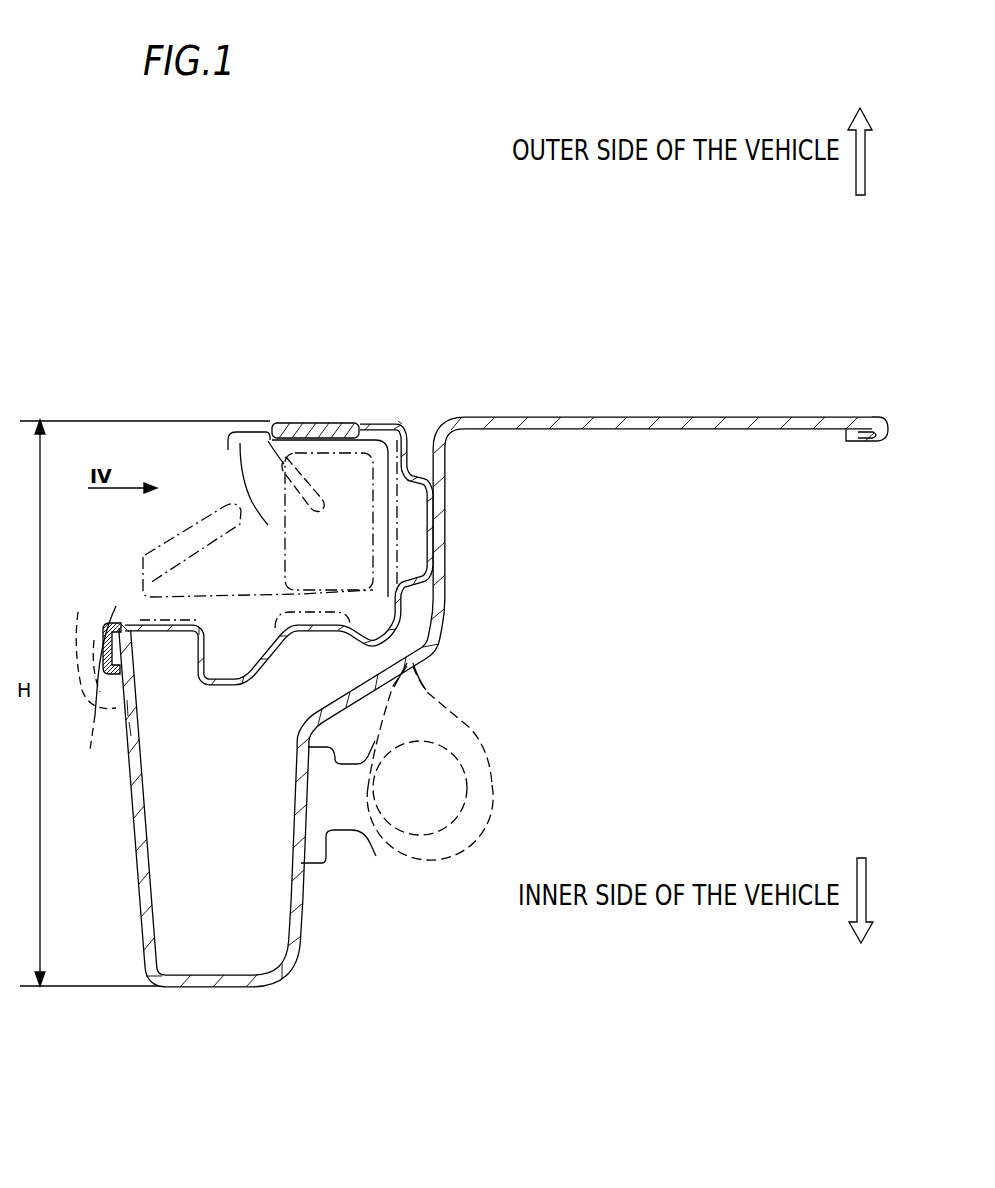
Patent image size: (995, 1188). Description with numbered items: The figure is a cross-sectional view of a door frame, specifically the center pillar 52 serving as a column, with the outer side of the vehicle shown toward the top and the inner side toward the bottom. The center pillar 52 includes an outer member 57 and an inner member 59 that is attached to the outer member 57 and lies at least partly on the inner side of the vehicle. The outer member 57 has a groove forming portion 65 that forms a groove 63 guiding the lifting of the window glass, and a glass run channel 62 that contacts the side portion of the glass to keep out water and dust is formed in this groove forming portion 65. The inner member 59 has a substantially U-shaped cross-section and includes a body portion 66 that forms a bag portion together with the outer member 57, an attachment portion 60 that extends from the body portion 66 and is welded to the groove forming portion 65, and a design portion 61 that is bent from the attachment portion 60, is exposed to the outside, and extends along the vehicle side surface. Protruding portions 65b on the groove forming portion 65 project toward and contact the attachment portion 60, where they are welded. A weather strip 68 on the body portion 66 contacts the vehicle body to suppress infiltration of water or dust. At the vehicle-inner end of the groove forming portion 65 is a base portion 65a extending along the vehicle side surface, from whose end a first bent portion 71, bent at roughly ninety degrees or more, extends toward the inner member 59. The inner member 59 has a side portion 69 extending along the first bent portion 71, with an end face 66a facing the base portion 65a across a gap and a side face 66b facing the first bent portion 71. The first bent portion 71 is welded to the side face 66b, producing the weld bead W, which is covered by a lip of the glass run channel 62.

The center pillar 52 is at (625, 343).
The outer member 57 is at (410, 413).
The inner member 59 is at (475, 694).
The attachment portion 60 is at (447, 516).
The design portion 61 is at (740, 416).
The glass run channel 62 is at (93, 740).
The groove 63 is at (268, 525).
The groove forming portion 65 is at (282, 534).
The base portion 65a is at (147, 625).
The protruding portions 65b is at (377, 617).
The body portion 66 is at (233, 988).
The end face 66a is at (121, 623).
The side face 66b is at (119, 690).
The weather strip 68 is at (491, 806).
The side portion 69 is at (133, 716).
The first bent portion 71 is at (113, 630).
The weld bead W is at (98, 650).